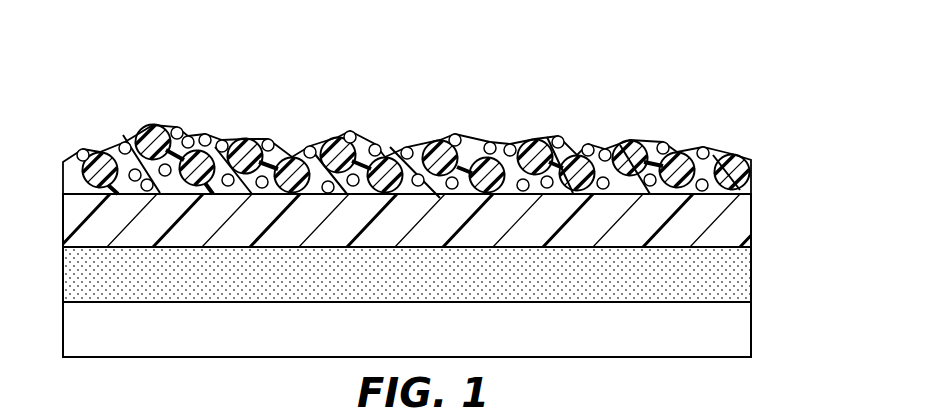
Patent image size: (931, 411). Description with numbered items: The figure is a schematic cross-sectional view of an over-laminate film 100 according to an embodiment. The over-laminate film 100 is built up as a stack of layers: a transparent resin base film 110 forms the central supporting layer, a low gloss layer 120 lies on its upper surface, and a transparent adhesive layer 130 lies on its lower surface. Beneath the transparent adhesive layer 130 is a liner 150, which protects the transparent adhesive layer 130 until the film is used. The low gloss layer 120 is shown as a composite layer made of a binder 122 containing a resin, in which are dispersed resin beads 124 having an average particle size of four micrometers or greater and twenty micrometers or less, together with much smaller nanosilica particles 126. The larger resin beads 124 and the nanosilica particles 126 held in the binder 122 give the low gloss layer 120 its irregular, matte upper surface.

The over-laminate film 100 is at (700, 62).
The transparent resin base film 110 is at (722, 227).
The low gloss layer 120 is at (762, 127).
The binder 122 is at (692, 152).
The resin beads 124 is at (170, 118).
The nanosilica particles 126 is at (456, 134).
The transparent adhesive layer 130 is at (722, 275).
The liner 150 is at (722, 328).